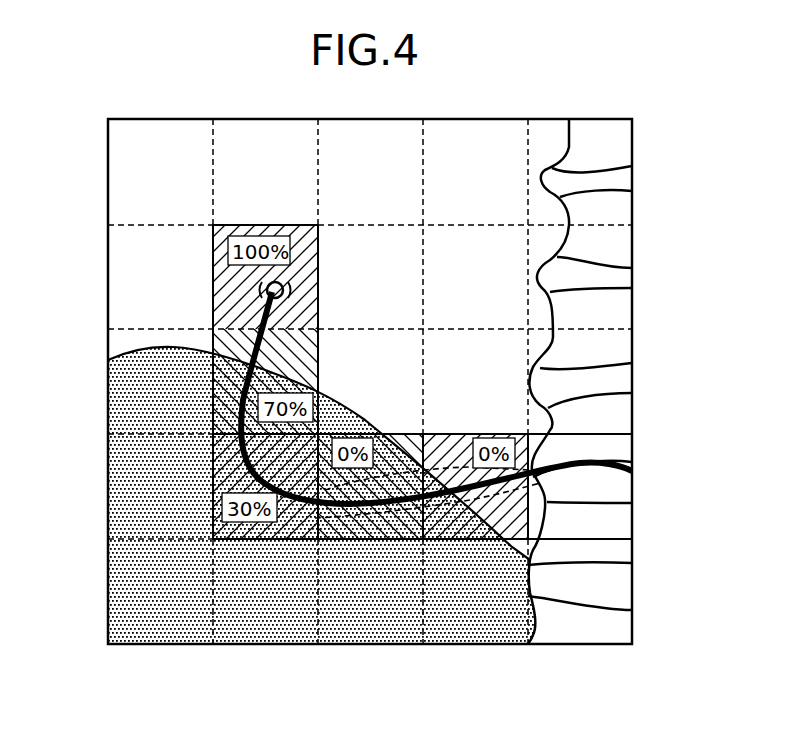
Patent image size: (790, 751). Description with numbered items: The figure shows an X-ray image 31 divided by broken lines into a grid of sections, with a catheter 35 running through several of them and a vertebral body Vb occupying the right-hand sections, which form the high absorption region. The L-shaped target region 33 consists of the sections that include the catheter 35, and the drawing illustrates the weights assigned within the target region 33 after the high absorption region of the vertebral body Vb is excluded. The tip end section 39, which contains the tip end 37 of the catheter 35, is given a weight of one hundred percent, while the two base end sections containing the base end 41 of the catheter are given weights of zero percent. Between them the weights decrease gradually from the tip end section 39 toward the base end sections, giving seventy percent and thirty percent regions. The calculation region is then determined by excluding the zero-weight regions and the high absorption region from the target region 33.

The X-ray image 31 is at (518, 95).
The target region 33 is at (218, 486).
The catheter 35 is at (240, 382).
The tip end 37 is at (250, 290).
The tip end section 39 is at (300, 268).
The base end 41 is at (483, 540).
The vertebral body Vb is at (620, 205).